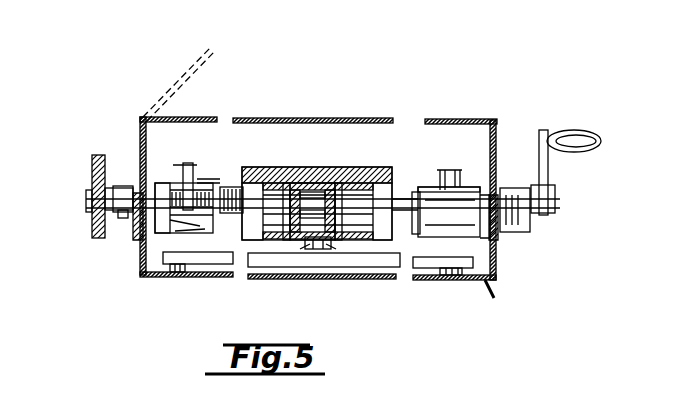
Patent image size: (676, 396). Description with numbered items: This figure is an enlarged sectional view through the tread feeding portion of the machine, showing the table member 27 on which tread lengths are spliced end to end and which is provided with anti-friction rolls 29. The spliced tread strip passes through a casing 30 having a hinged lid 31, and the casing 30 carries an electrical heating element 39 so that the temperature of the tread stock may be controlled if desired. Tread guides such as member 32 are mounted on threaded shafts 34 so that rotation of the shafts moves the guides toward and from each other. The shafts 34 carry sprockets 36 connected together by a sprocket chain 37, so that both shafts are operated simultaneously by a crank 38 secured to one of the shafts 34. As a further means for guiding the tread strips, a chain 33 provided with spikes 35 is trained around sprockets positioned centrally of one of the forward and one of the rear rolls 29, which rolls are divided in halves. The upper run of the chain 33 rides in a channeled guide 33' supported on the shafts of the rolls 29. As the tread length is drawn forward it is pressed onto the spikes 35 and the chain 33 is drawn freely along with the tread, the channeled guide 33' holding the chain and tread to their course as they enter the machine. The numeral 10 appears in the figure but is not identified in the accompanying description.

The cylinder 10 is at (308, 168).
The table member 27 is at (498, 246).
The anti-friction rolls 29 is at (193, 222).
The casing 30 is at (496, 140).
The hinged lid 31 is at (187, 74).
The tread guide member 32 is at (190, 165).
The chain 33 is at (318, 270).
The channeled guide 33' is at (329, 183).
The threaded shafts 34 is at (235, 185).
The spikes 35 is at (285, 170).
The sprockets 36 is at (90, 178).
The sprocket chain 37 is at (92, 226).
The crank 38 is at (548, 172).
The electrical heating element 39 is at (152, 275).